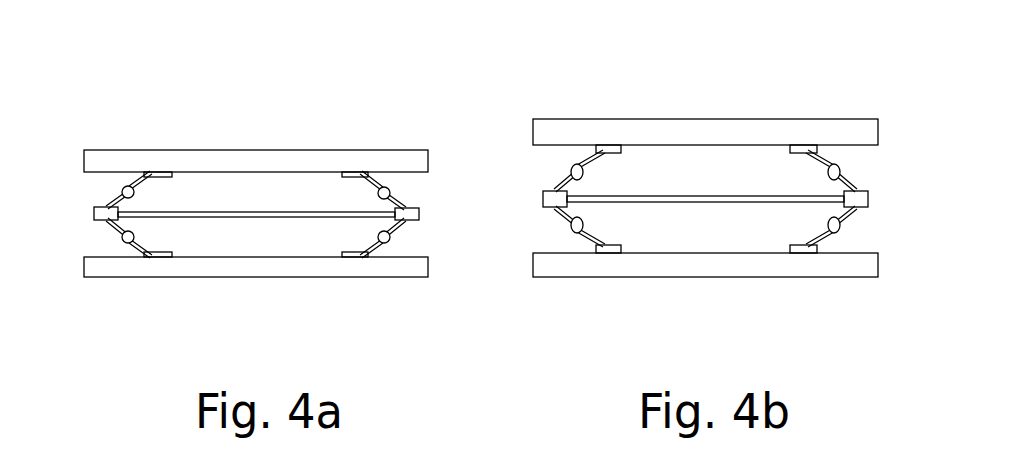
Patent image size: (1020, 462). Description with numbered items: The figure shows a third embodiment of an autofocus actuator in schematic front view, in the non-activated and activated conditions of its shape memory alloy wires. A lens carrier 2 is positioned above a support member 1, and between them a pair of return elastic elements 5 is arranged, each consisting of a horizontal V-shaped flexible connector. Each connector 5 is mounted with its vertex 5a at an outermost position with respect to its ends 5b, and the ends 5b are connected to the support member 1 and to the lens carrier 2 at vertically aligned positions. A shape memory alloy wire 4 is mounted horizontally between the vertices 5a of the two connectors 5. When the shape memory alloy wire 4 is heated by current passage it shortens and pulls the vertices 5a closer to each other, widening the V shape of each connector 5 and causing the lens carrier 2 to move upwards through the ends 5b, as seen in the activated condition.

In FIG. 4a, the support member 1 is at (93, 268).
In FIG. 4b, the support member 1 is at (830, 263).
In FIG. 4a, the lens carrier 2 is at (146, 165).
In FIG. 4b, the lens carrier 2 is at (692, 133).
In FIG. 4a, the shape memory alloy wire 4 is at (253, 215).
In FIG. 4b, the shape memory alloy wire 4 is at (718, 199).
In FIG. 4a, the return elastic element 5 is at (388, 189).
In FIG. 4b, the return elastic element 5 is at (838, 167).
In FIG. 4a, the vertex 5a is at (105, 215).
In FIG. 4b, the vertex 5a is at (858, 199).
In FIG. 4a, the ends 5b is at (163, 177).
In FIG. 4b, the ends 5b is at (607, 154).